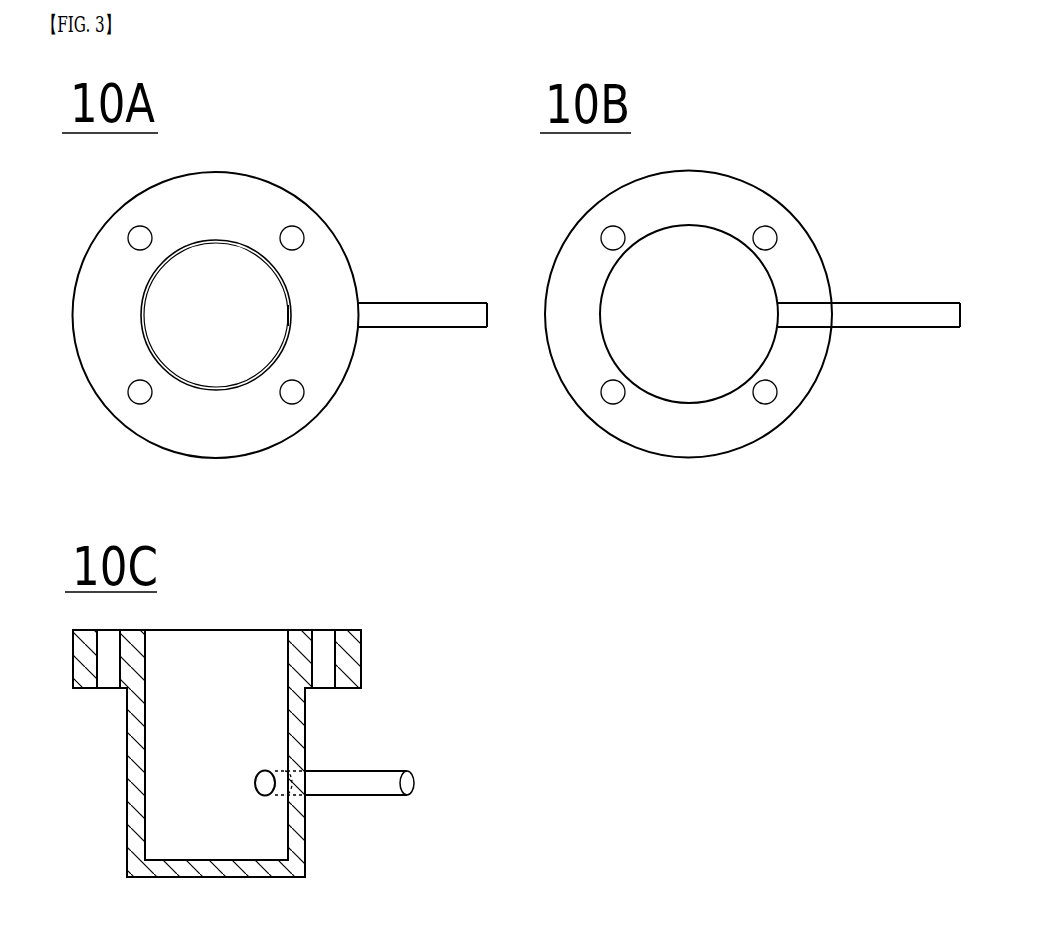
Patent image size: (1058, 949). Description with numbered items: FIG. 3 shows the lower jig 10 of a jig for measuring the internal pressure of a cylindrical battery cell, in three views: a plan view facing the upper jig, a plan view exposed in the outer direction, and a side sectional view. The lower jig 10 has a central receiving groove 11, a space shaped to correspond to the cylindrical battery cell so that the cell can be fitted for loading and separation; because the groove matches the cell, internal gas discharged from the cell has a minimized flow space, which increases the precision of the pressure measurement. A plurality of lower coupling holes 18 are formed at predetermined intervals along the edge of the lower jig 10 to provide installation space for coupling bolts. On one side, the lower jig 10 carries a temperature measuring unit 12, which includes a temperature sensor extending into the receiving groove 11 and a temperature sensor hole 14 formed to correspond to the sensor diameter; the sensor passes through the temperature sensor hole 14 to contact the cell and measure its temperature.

The lower jig 10 is at (323, 280).
The receiving groove 11 is at (226, 278).
The temperature measuring unit 12 is at (404, 739).
The temperature sensor hole 14 is at (275, 768).
The lower coupling hole 18 is at (140, 392).